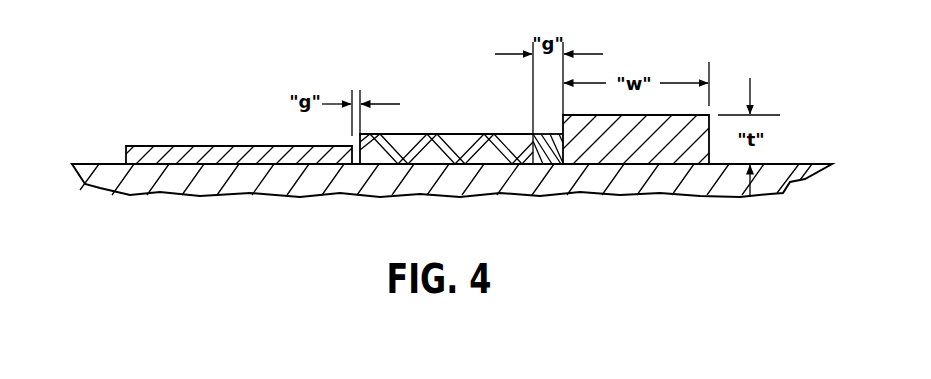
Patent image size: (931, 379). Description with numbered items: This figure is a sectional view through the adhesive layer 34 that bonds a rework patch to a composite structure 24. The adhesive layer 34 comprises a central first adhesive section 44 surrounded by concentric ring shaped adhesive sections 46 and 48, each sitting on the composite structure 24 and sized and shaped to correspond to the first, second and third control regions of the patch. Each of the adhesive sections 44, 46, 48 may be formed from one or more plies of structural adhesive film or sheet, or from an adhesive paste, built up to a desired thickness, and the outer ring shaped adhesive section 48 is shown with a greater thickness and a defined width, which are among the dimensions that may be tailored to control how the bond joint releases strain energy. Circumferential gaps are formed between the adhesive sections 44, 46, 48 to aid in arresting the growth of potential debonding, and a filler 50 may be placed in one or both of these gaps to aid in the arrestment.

The composite structure 24 is at (137, 176).
The adhesive layer 34 is at (138, 98).
The first adhesive section 44 is at (227, 158).
The ring shaped adhesive section 46 is at (443, 152).
The ring shaped adhesive section 48 is at (642, 134).
The filler 50 is at (547, 148).